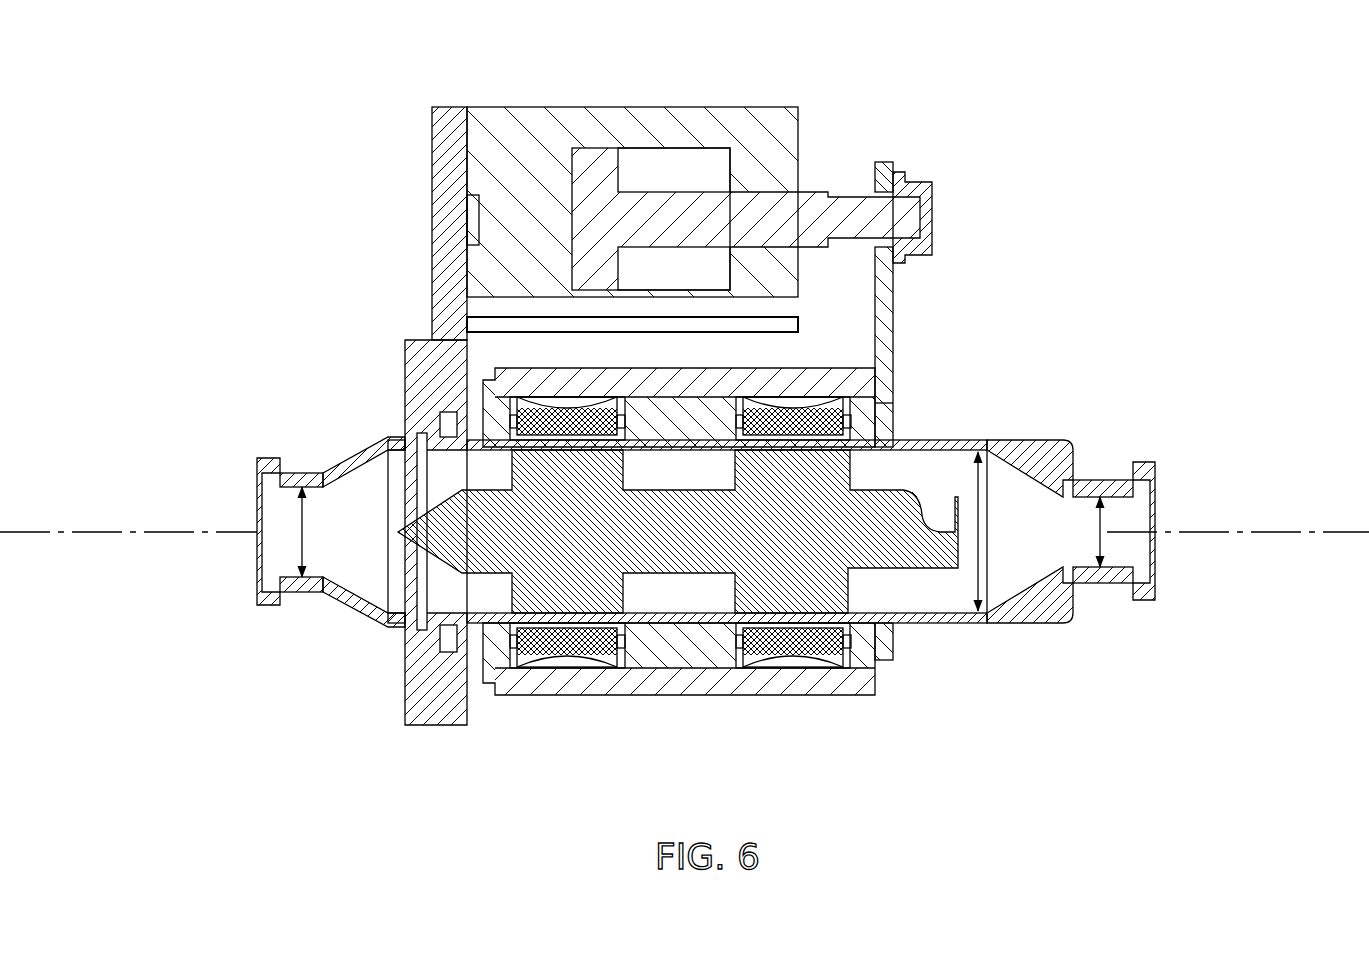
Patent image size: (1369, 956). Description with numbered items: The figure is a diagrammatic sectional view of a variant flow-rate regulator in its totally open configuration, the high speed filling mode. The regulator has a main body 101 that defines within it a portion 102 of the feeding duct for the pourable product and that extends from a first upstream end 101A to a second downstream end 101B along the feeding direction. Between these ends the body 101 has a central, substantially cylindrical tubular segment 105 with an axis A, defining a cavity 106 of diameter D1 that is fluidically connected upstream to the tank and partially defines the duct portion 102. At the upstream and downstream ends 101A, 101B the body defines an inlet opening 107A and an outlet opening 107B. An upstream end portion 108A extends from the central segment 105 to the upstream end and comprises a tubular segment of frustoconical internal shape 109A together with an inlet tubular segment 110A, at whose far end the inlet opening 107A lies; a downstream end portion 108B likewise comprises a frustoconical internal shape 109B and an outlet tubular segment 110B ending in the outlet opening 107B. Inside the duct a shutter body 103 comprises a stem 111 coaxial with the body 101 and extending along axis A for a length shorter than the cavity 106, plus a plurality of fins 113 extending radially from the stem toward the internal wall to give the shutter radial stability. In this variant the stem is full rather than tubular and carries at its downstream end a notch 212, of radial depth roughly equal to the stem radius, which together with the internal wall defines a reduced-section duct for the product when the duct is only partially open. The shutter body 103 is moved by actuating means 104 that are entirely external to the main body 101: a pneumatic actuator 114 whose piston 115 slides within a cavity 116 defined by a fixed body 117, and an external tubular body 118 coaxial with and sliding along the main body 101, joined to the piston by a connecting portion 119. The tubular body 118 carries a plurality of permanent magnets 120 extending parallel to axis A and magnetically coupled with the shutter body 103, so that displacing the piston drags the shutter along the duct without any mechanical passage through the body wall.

The main body 101 is at (957, 636).
The first upstream end 101A is at (242, 596).
The second downstream end 101B is at (1178, 462).
The portion of feeding duct 102 is at (895, 603).
The shutter body 103 is at (887, 476).
The actuating means 104 is at (838, 163).
The cylindrical tubular segment 105 is at (955, 443).
The cavity 106 is at (665, 600).
The inlet opening 107A is at (273, 505).
The outlet opening 107B is at (1160, 552).
The upstream end portion 108A is at (345, 447).
The downstream end portion 108B is at (1057, 433).
The frustoconical internal shape 109A is at (348, 597).
The frustoconical internal shape 109B is at (1050, 605).
The inlet tubular segment 110A is at (295, 582).
The outlet tubular segment 110B is at (1100, 578).
The stem 111 is at (857, 571).
The fins 113 is at (788, 466).
The pneumatic actuator 114 is at (566, 92).
The piston 115 is at (806, 200).
The cavity 116 is at (640, 165).
The fixed body 117 is at (477, 106).
The tubular body 118 is at (793, 375).
The connecting portion 119 is at (880, 298).
The permanent magnets 120 is at (557, 410).
The notch 212 is at (1022, 440).
The axis A is at (1313, 528).
The diameter D1 is at (983, 515).